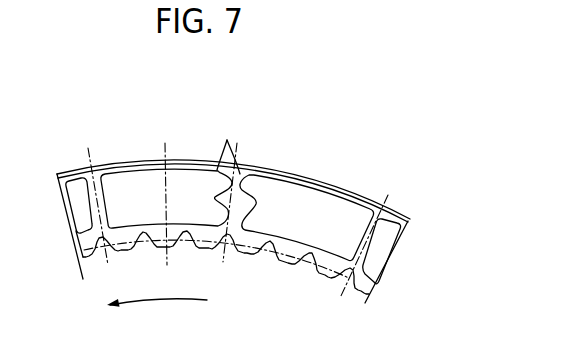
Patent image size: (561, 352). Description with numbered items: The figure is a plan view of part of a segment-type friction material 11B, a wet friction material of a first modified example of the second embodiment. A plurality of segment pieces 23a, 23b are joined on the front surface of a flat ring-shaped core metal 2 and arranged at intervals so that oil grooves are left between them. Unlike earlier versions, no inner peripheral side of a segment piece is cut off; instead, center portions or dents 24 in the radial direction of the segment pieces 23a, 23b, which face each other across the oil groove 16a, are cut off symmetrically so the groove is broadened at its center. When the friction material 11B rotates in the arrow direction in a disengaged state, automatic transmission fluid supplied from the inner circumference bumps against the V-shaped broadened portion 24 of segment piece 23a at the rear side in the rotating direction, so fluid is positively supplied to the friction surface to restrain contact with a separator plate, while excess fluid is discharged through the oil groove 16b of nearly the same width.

The segment-type friction material 11B is at (259, 158).
The core metal 2 is at (343, 193).
The oil groove 16a is at (237, 255).
The oil groove 16b is at (85, 174).
The segment piece 23a is at (300, 190).
The segment piece 23b is at (132, 178).
The center portion 24 is at (226, 142).